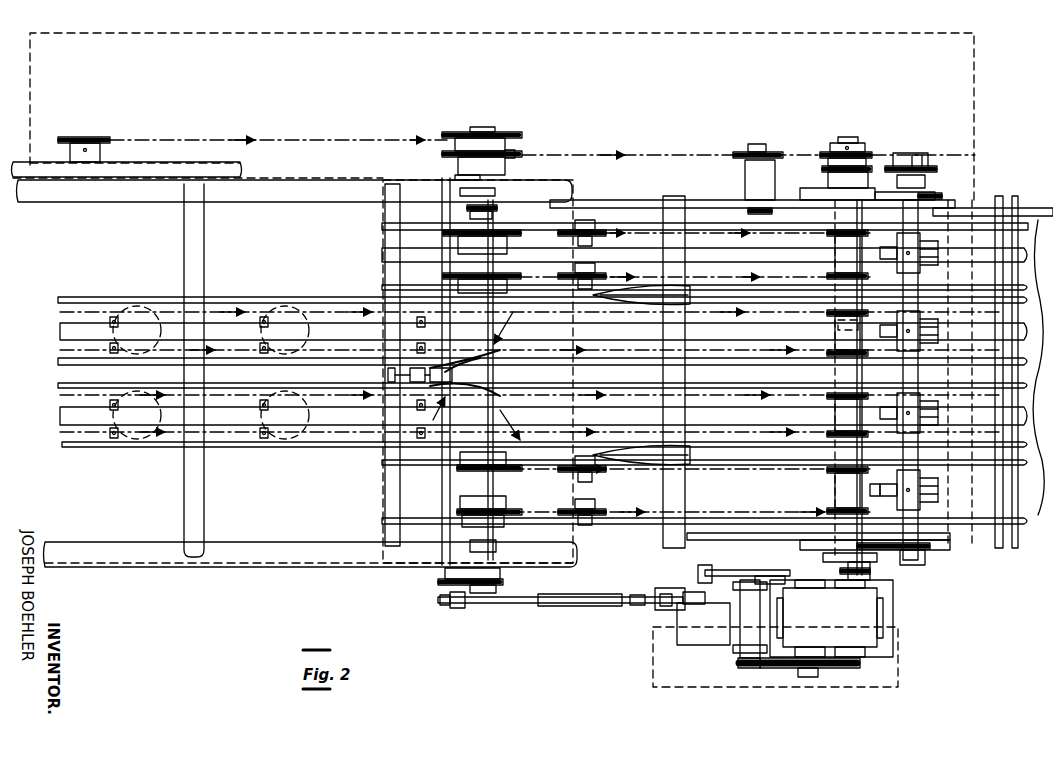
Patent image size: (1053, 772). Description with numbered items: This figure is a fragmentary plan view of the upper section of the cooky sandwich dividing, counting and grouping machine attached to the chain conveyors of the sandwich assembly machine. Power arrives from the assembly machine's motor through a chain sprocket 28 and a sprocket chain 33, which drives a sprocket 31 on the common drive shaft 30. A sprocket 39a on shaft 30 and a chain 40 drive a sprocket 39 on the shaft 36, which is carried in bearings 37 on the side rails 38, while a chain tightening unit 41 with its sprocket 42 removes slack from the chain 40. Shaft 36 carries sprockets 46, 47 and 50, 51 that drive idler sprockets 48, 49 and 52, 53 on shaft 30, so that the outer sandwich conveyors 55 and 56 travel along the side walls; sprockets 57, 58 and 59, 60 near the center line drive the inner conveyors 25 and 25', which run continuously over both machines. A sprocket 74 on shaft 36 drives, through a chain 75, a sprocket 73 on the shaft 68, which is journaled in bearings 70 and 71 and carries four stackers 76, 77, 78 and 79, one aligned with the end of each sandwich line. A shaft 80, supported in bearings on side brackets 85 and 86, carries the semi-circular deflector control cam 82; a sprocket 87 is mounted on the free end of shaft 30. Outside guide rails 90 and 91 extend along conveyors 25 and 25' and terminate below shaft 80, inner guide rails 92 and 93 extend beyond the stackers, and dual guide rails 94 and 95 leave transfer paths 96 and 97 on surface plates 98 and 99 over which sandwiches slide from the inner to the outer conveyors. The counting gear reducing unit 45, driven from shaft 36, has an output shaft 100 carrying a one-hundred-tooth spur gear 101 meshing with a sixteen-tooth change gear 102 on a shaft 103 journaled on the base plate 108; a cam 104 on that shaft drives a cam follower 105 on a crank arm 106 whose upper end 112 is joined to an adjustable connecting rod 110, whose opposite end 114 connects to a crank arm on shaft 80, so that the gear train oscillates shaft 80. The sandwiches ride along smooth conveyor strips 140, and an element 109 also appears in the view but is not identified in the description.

The cooky sandwich chain conveyor 25 is at (519, 325).
The cooky sandwich chain conveyor 25' is at (518, 435).
The chain sprocket 28 is at (105, 140).
The common drive shaft 30 is at (485, 132).
The sprocket 31 is at (447, 135).
The sprocket chain 33 is at (318, 140).
The shaft 36 is at (850, 138).
The bearings 37 is at (812, 190).
The side rails 38 is at (645, 200).
The sprocket 39 is at (835, 152).
The sprocket 39a is at (520, 155).
The chain 40 is at (638, 155).
The adjustable chain tightening unit 41 is at (745, 187).
The sprocket 42 is at (740, 152).
The counting gear reducing unit 45 is at (840, 611).
The sprocket 46 is at (828, 233).
The sprocket 47 is at (827, 306).
The idler sprocket 48 is at (512, 262).
The idler sprocket 49 is at (478, 365).
The sprocket 50 is at (828, 470).
The sprocket 51 is at (840, 510).
The idler sprocket 52 is at (505, 470).
The idler sprocket 53 is at (510, 522).
The outer conveyor chain unit 55 is at (748, 261).
The conveyor 56 is at (782, 476).
The sprocket 57 is at (866, 312).
The sprocket 58 is at (830, 356).
The sprocket 59 is at (869, 395).
The sprocket 60 is at (869, 436).
The shaft 68 is at (905, 155).
The bearing 70 is at (925, 195).
The bearing 71 is at (928, 548).
The sprocket 73 is at (937, 170).
The sprocket 74 is at (873, 168).
The chain 75 is at (915, 160).
The stacker 76 is at (940, 250).
The stacker 77 is at (940, 333).
The stacker 78 is at (940, 413).
The stacker 79 is at (940, 490).
The shaft 80 is at (388, 528).
The segment deflector control cam 82 is at (449, 391).
The side bracket 85 is at (430, 175).
The side bracket 86 is at (433, 572).
The sprocket 87 is at (500, 585).
The outside guide rail 90 is at (258, 298).
The outside guide rail 91 is at (240, 448).
The inner side guide rail 92 is at (300, 365).
The inner side guide rail 93 is at (245, 392).
The dual type guide rail 94 is at (735, 303).
The dual type guide rail 95 is at (735, 450).
The transfer path 96 is at (582, 262).
The transfer path 97 is at (582, 483).
The surface plate 98 is at (566, 301).
The surface plate 99 is at (566, 461).
The output shaft 100 is at (810, 678).
The spur gear 101 is at (790, 668).
The pinion type change gear 102 is at (762, 668).
The shaft 103 is at (745, 633).
The cam 104 is at (728, 572).
The cam follower 105 is at (700, 575).
The crank arm 106 is at (712, 603).
The base plate 108 is at (660, 640).
The gear 109 is at (858, 578).
The adjustable connecting rod 110 is at (592, 606).
The upper end of crank arm 112 is at (663, 590).
The opposite end of connecting rod 114 is at (460, 608).
The smooth conveyor strip 140 is at (145, 330).